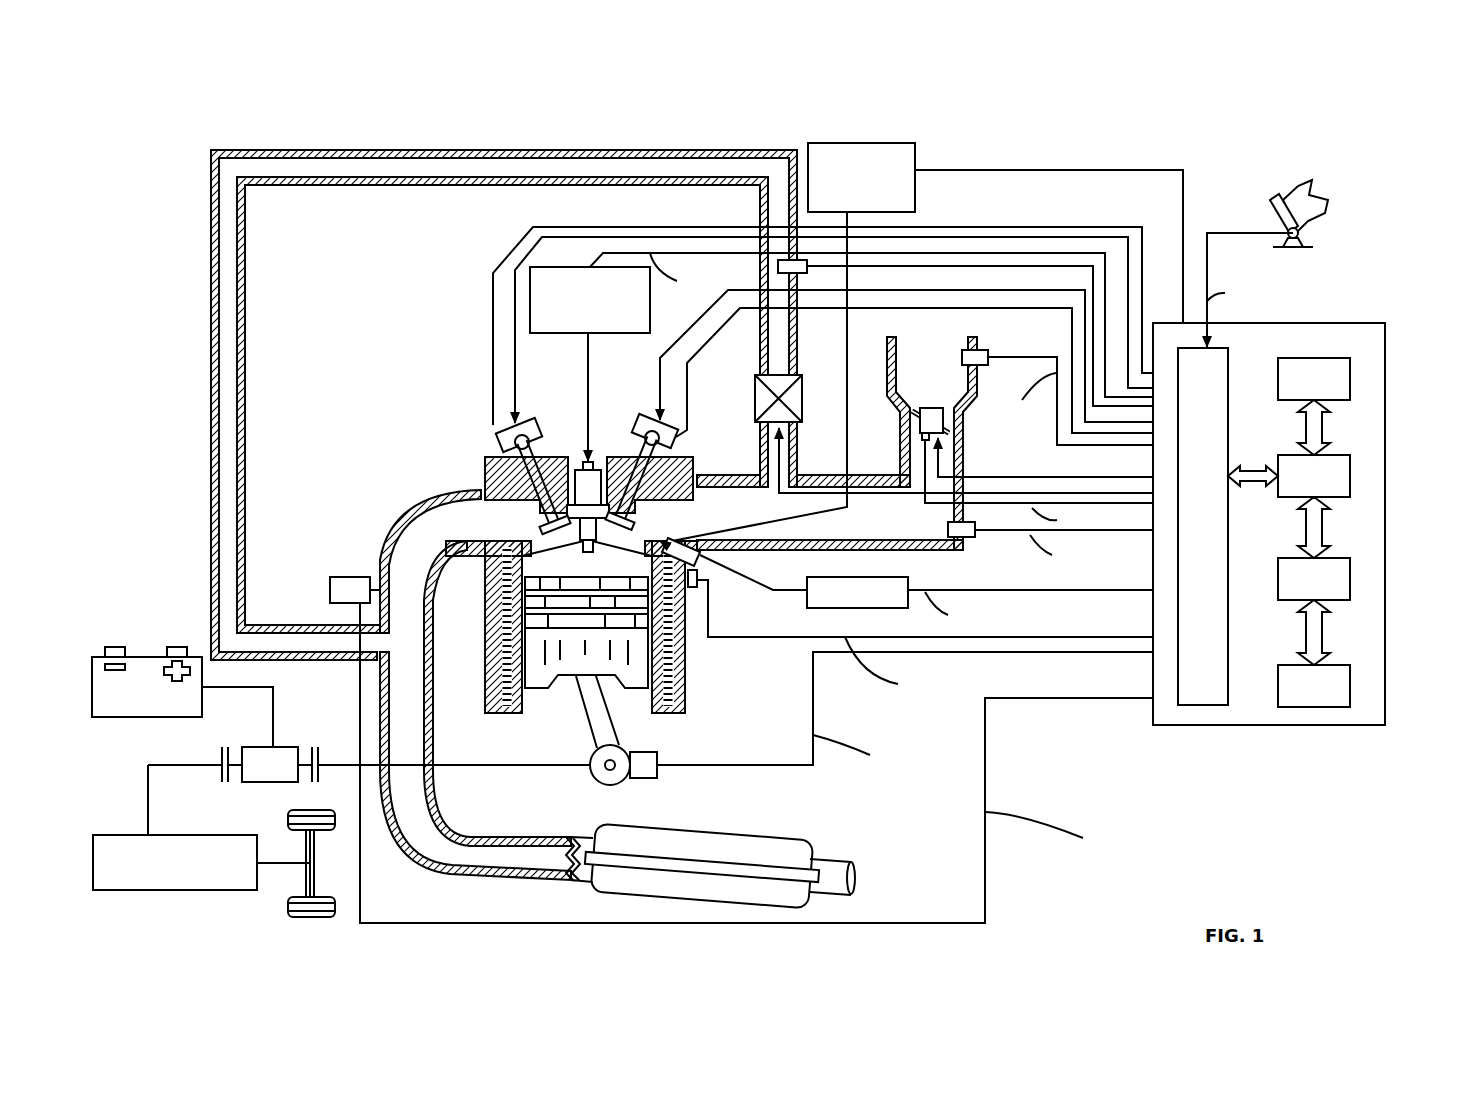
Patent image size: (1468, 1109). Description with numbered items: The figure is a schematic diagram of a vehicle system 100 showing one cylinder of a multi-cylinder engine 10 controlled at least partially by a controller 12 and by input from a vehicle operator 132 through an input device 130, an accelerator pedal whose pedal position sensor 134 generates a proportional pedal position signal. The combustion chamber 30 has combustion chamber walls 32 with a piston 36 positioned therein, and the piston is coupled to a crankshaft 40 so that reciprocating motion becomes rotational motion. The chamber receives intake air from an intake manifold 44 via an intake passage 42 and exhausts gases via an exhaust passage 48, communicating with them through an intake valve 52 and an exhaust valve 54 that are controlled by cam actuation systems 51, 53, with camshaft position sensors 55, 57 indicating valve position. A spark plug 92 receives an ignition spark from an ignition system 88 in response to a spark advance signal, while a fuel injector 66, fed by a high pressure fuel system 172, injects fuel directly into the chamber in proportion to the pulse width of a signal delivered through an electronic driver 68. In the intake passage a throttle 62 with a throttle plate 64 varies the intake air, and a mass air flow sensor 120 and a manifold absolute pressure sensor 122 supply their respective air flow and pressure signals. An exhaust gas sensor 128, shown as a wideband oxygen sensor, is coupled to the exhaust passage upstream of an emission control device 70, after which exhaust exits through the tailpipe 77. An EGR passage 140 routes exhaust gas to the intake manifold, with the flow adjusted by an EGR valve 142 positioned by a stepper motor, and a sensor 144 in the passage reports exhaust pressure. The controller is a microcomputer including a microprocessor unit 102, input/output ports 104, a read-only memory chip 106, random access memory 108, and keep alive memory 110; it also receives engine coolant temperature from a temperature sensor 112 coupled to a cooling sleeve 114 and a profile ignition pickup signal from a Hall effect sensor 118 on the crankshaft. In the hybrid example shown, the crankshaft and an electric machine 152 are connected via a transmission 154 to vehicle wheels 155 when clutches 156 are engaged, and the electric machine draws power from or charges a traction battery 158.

The vehicle system 100 is at (1390, 134).
The engine 10 is at (413, 400).
The controller 12 is at (1308, 510).
The combustion chamber 30 is at (585, 563).
The combustion chamber walls 32 is at (625, 655).
The piston 36 is at (571, 660).
The crankshaft 40 is at (590, 772).
The intake passage 42 is at (941, 384).
The intake manifold 44 is at (893, 529).
The exhaust passage 48 is at (463, 533).
The cam actuation system 51 is at (892, 411).
The intake valve 52 is at (645, 533).
The cam actuation system 53 is at (508, 450).
The exhaust valve 54 is at (533, 513).
The camshaft position sensor 55 is at (668, 438).
The camshaft position sensor 57 is at (504, 440).
The throttle 62 is at (948, 418).
The throttle plate 64 is at (1023, 470).
The fuel injector 66 is at (700, 562).
The electronic driver 68 is at (835, 608).
The emission control device 70 is at (765, 834).
The tailpipe 77 is at (853, 870).
The ignition system 88 is at (540, 267).
The spark plug 92 is at (593, 462).
The microprocessor unit 102 is at (1350, 476).
The input/output ports 104 is at (1232, 356).
The read-only memory chip 106 is at (1350, 376).
The random access memory 108 is at (1350, 579).
The keep alive memory 110 is at (1350, 684).
The temperature sensor 112 is at (702, 588).
The cooling sleeve 114 is at (672, 660).
The Hall effect sensor 118 is at (657, 779).
The mass air flow sensor 120 is at (988, 352).
The manifold absolute pressure sensor 122 is at (975, 540).
The exhaust gas sensor 128 is at (330, 589).
The input device 130 is at (1325, 255).
The vehicle operator 132 is at (1330, 198).
The pedal position sensor 134 is at (1315, 236).
The EGR passage 140 is at (499, 152).
The EGR valve 142 is at (802, 402).
The sensor 144 is at (778, 266).
The electric machine 152 is at (272, 786).
The transmission 154 is at (233, 890).
The vehicle wheels 155 is at (312, 918).
The clutches 156 is at (219, 753).
The traction battery 158 is at (147, 655).
The fuel system 172 is at (868, 143).